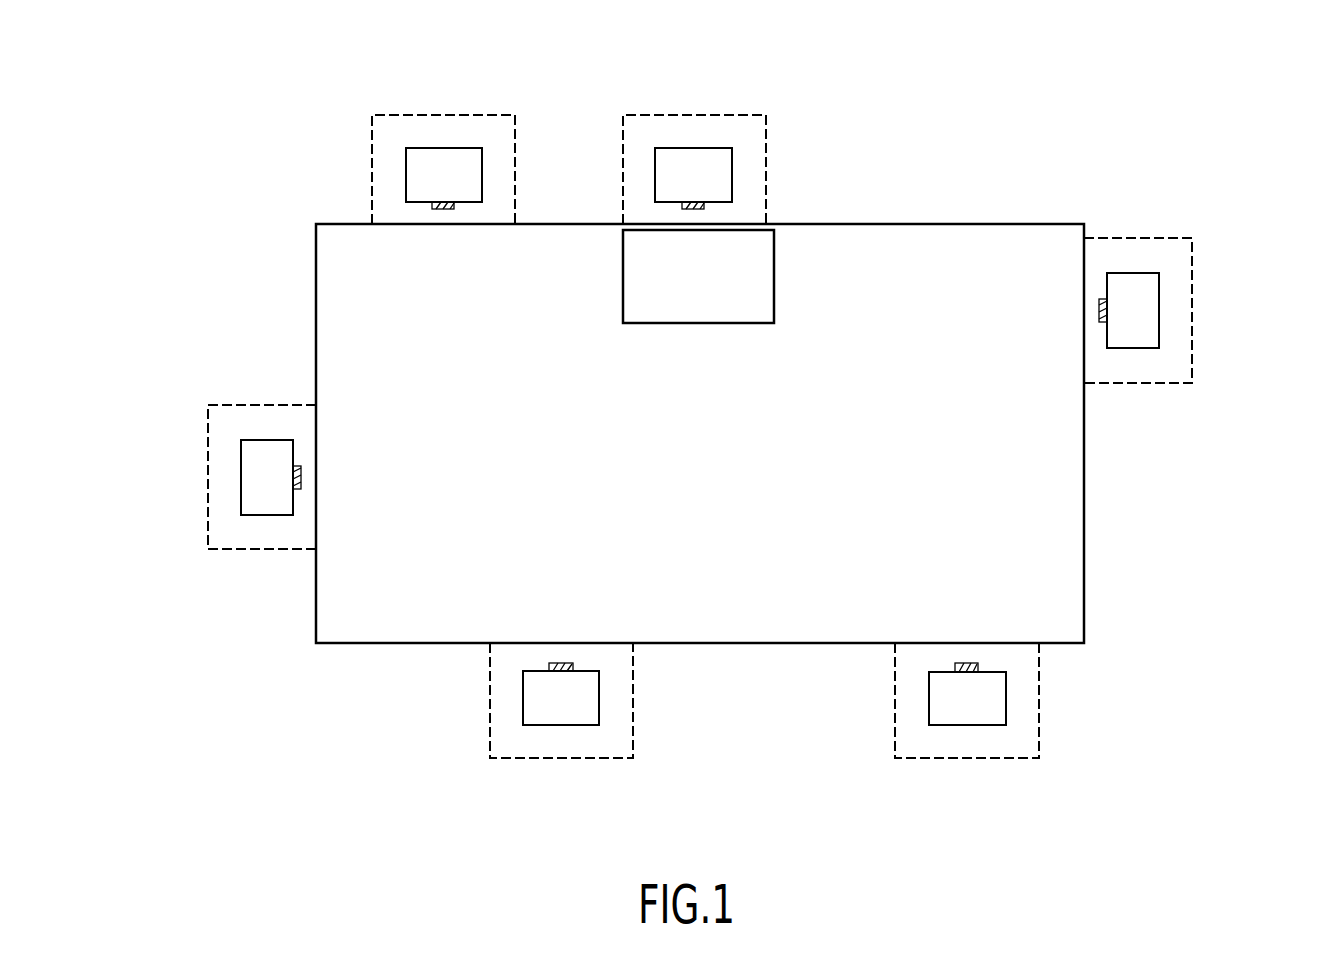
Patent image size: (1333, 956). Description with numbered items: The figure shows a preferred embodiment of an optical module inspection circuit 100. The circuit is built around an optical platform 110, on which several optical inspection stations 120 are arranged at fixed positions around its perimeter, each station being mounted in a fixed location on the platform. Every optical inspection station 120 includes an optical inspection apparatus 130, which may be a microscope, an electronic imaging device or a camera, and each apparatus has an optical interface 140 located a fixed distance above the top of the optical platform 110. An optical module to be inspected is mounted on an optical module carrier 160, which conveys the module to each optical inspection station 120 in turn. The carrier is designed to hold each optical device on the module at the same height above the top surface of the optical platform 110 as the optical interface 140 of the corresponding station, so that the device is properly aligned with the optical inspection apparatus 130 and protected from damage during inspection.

The optical module inspection circuit 100 is at (197, 163).
The optical platform 110 is at (305, 657).
The optical inspection station 120 is at (460, 105).
The optical inspection apparatus 130 is at (403, 140).
The optical interface 140 is at (425, 205).
The optical module carrier 160 is at (762, 333).